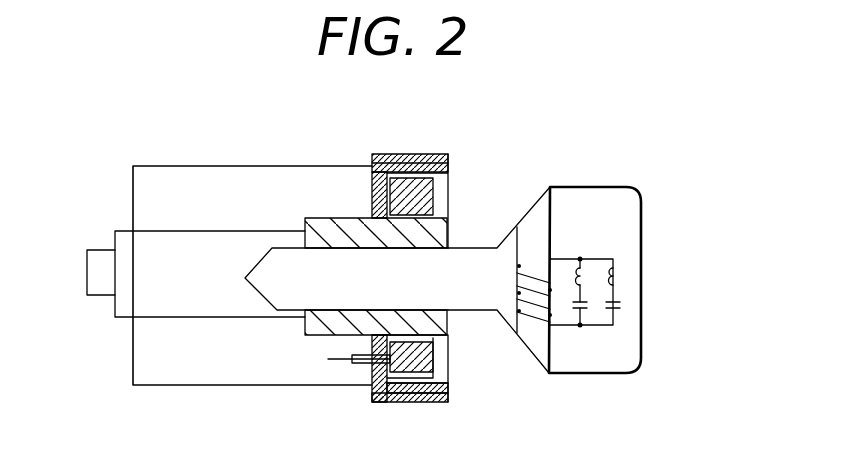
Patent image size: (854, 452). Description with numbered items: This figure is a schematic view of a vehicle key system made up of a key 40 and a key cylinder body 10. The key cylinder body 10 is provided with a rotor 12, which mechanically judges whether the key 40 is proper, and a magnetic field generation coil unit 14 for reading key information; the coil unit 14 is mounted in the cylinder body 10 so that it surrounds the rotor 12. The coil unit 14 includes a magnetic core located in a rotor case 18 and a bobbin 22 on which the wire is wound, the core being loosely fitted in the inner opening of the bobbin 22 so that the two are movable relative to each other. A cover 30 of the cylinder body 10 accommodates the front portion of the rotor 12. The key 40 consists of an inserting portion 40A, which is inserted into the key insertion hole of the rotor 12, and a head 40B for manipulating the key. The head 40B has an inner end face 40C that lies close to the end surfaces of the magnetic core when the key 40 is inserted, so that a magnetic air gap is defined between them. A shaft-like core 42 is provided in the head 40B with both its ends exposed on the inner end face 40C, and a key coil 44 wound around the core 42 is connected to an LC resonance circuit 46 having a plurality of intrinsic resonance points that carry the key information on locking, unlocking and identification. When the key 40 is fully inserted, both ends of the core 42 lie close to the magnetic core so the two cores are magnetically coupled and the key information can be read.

The key cylinder body 10 is at (213, 162).
The rotor 12 is at (453, 226).
The magnetic field generation coil unit 14 is at (449, 184).
The rotor case 18 is at (449, 385).
The bobbin 22 is at (436, 357).
The cover 30 is at (407, 403).
The key 40 is at (580, 286).
The inserting portion 40A is at (280, 293).
The head 40B is at (644, 249).
The inner end face 40C is at (535, 359).
The shaft-like core 42 is at (553, 213).
The key coil 44 is at (513, 285).
The LC resonance circuit 46 is at (586, 332).